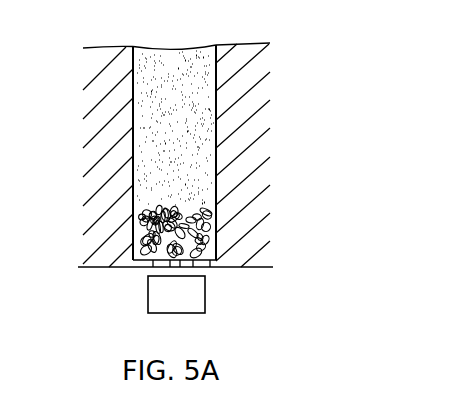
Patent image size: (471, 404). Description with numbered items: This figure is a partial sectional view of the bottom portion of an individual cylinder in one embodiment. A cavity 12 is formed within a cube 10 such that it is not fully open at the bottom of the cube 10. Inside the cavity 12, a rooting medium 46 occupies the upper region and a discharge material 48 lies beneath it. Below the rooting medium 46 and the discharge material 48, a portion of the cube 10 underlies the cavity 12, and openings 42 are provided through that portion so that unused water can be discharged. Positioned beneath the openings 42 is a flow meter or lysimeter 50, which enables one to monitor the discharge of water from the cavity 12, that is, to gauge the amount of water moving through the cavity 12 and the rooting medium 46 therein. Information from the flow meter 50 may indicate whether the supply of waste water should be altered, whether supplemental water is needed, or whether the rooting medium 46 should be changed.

The cube 10 is at (69, 105).
The cavity 12 is at (181, 50).
The rooting medium 46 is at (205, 162).
The discharge material 48 is at (165, 219).
The openings 42 is at (198, 263).
The flow meter or lysimeter 50 is at (189, 303).